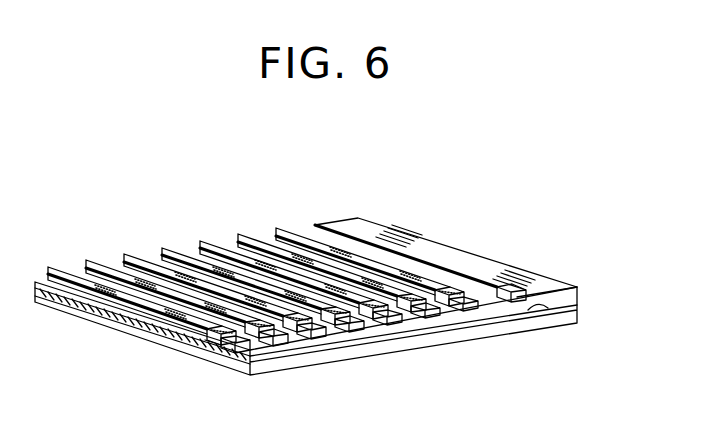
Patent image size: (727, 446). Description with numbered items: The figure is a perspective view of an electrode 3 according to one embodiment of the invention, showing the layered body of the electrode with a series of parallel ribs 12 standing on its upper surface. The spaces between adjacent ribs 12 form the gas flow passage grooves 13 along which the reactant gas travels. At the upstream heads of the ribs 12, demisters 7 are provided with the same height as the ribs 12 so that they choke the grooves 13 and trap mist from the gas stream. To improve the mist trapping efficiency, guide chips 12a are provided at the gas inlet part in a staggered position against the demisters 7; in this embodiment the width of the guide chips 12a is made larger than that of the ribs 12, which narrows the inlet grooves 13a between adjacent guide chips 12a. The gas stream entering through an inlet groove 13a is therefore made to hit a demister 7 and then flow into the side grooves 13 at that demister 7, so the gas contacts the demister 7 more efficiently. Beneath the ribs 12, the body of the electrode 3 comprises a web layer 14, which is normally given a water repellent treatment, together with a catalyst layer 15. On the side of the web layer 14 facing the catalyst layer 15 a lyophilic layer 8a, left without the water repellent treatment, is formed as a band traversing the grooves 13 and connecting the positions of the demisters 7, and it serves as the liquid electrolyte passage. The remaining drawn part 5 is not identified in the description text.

The electrode 3 is at (337, 218).
The base substrate 5 is at (508, 326).
The demister 7 is at (466, 290).
The lyophilic layer 8a is at (220, 340).
The rib 12 is at (250, 240).
The guide chip 12a is at (326, 339).
The gas flow passage groove 13 is at (192, 245).
The inlet groove 13a is at (386, 322).
The web layer 14 is at (153, 332).
The catalyst layer 15 is at (458, 326).